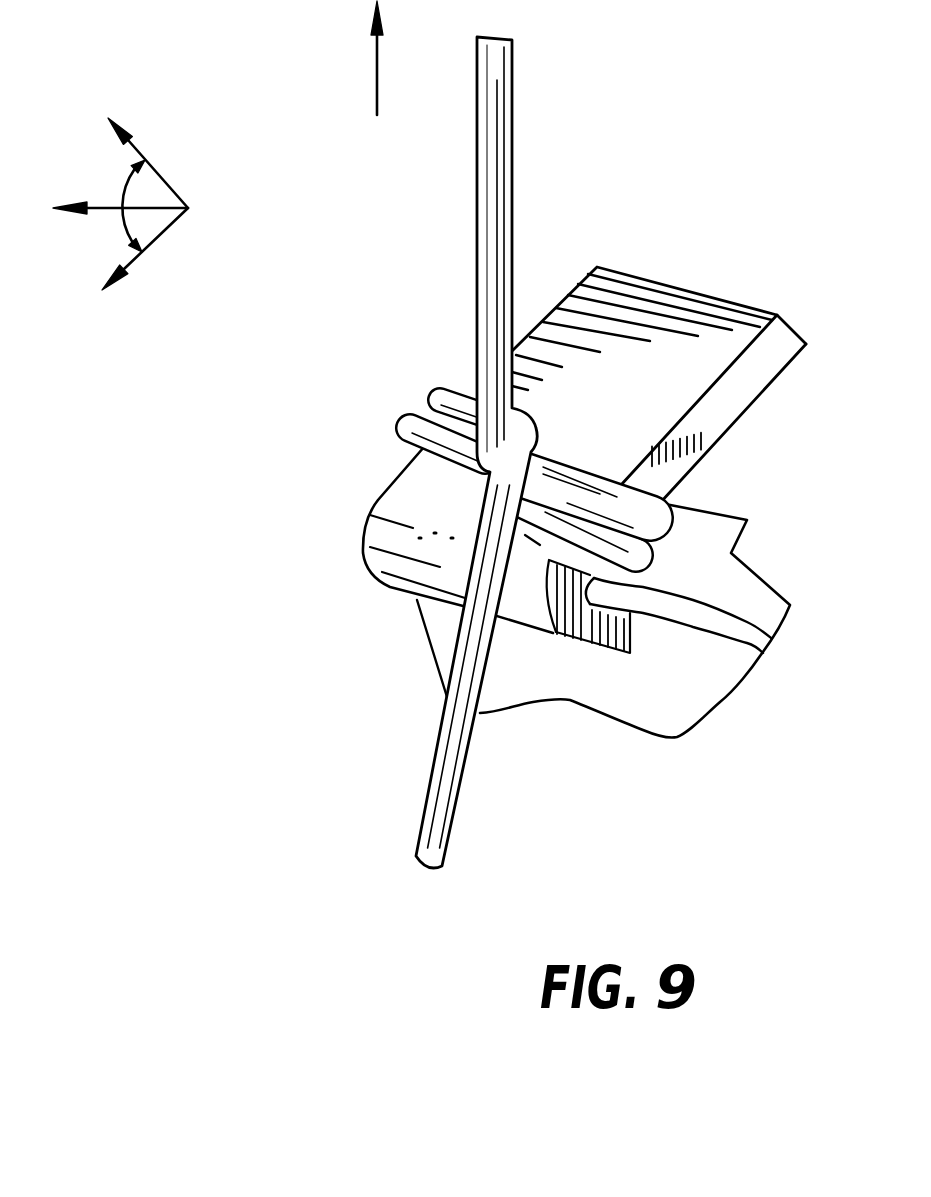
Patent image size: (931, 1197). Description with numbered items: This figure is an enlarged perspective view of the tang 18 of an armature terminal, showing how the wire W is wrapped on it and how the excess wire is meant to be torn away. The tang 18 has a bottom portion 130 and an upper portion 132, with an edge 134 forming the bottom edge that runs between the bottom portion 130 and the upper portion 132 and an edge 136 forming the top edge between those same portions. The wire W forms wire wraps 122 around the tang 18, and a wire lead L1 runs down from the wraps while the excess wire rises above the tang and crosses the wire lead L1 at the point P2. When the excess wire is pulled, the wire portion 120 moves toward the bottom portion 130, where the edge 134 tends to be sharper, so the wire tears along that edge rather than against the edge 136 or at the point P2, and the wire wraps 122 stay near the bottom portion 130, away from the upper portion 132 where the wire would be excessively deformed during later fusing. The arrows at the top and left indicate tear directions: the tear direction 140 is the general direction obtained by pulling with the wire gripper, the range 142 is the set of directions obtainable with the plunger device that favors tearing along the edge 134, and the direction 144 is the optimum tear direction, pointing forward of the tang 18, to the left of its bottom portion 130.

The tang 18 is at (606, 362).
The wire portion 120 is at (675, 545).
The wire wraps 122 is at (437, 372).
The bottom portion 130 is at (526, 604).
The upper portion 132 is at (800, 309).
The edge 134 is at (762, 638).
The edge 136 is at (708, 396).
The tear direction 140 is at (377, 73).
The range 142 is at (138, 158).
The direction 144 is at (103, 210).
The wire W is at (477, 265).
The wire lead L1 is at (428, 773).
The point P2 is at (458, 475).